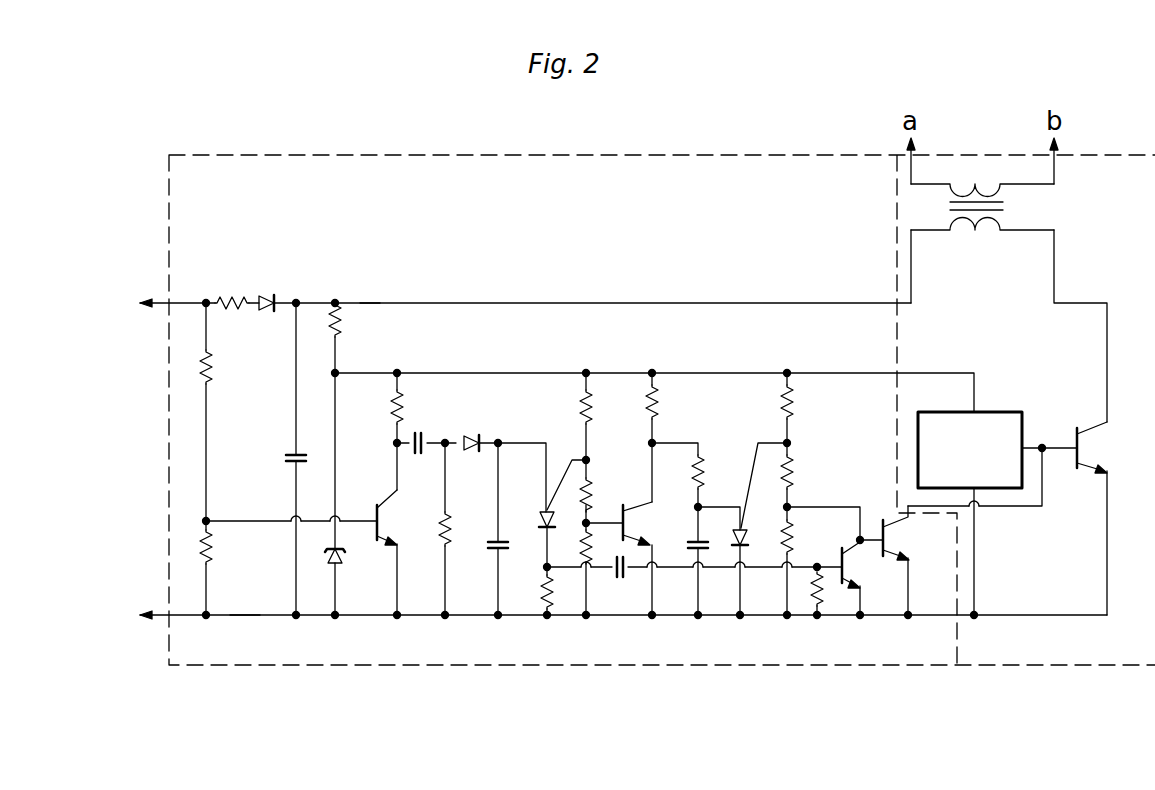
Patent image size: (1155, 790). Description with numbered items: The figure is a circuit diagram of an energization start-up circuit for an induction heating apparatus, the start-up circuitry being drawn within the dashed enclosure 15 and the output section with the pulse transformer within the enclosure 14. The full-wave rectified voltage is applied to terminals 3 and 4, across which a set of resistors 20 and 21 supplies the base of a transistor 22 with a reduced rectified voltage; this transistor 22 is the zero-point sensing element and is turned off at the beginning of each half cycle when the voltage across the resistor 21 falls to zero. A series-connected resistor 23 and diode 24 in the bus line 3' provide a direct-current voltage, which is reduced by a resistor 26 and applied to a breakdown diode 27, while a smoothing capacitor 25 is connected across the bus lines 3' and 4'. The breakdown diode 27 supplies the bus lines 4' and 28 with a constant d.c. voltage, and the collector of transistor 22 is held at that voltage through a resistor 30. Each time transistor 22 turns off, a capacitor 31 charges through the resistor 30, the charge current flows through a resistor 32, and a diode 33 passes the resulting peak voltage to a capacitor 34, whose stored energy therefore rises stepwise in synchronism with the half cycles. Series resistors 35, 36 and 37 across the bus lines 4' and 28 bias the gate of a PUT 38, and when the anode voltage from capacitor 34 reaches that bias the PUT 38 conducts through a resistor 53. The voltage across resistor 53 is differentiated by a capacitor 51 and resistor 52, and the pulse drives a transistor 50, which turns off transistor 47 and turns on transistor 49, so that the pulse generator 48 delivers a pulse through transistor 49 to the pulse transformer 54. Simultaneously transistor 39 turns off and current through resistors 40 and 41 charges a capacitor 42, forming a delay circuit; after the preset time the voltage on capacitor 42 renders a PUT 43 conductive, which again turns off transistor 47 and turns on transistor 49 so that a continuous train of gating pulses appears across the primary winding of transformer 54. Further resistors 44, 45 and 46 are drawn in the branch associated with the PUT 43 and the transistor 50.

The terminal 3 is at (514, 304).
The terminal 4 is at (612, 616).
The bus line 3' is at (372, 276).
The bus line 4' is at (255, 634).
The output circuit 14 is at (1039, 657).
The control circuit 15 is at (646, 225).
The resistor 20 is at (212, 370).
The resistor 21 is at (210, 554).
The transistor 22 is at (384, 520).
The resistor 23 is at (226, 299).
The diode 24 is at (269, 298).
The smoothing capacitor 25 is at (290, 465).
The resistor 26 is at (340, 341).
The breakdown diode 27 is at (340, 558).
The bus line 28 is at (519, 371).
The resistor 30 is at (392, 405).
The capacitor 31 is at (418, 430).
The resistor 32 is at (450, 540).
The diode 33 is at (474, 434).
The capacitor 34 is at (509, 547).
The resistor 35 is at (591, 412).
The resistor 36 is at (592, 483).
The resistor 37 is at (590, 548).
The PUT 38 is at (542, 510).
The transistor 39 is at (630, 523).
The resistor 40 is at (656, 404).
The resistor 41 is at (701, 460).
The capacitor 42 is at (704, 552).
The PUT 43 is at (748, 522).
The resistor 44 is at (792, 406).
The resistor 45 is at (793, 463).
The resistor 46 is at (793, 535).
The transistor 47 is at (895, 539).
The pulse generator 48 is at (998, 412).
The transistor 49 is at (1085, 448).
The transistor 50 is at (848, 572).
The capacitor 51 is at (626, 580).
The resistor 52 is at (822, 592).
The resistor 53 is at (540, 596).
The pulse transformer 54 is at (1045, 215).